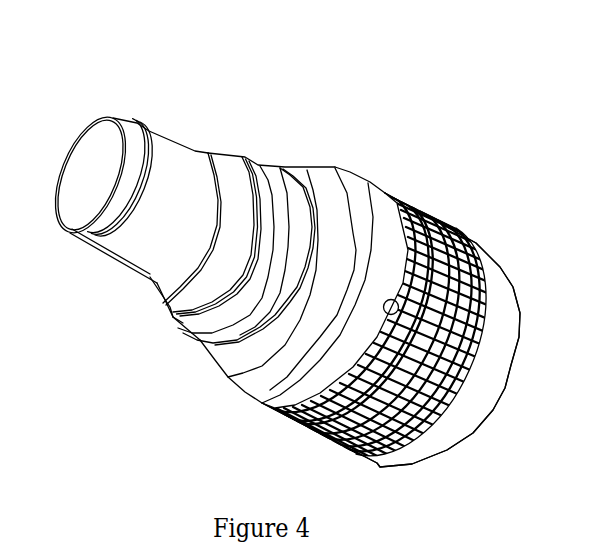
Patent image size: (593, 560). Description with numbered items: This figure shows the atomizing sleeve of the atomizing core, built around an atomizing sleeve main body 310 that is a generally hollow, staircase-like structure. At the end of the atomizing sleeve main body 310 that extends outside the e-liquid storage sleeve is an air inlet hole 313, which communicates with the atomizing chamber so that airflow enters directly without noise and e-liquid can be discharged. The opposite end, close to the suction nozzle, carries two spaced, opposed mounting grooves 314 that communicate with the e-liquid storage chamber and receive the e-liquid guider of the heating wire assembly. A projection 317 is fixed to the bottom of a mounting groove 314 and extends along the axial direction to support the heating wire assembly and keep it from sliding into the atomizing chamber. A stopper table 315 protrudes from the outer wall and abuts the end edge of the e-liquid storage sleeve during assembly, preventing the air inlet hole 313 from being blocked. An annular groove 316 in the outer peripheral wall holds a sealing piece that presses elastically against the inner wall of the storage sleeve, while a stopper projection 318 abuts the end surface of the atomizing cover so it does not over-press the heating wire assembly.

The atomizing sleeve main body 310 is at (260, 351).
The air inlet hole 313 is at (456, 233).
The mounting grooves 314 is at (128, 270).
The stopper table 315 is at (383, 223).
The annular groove 316 is at (274, 195).
The projection 317 is at (187, 282).
The stopper projection 318 is at (209, 152).